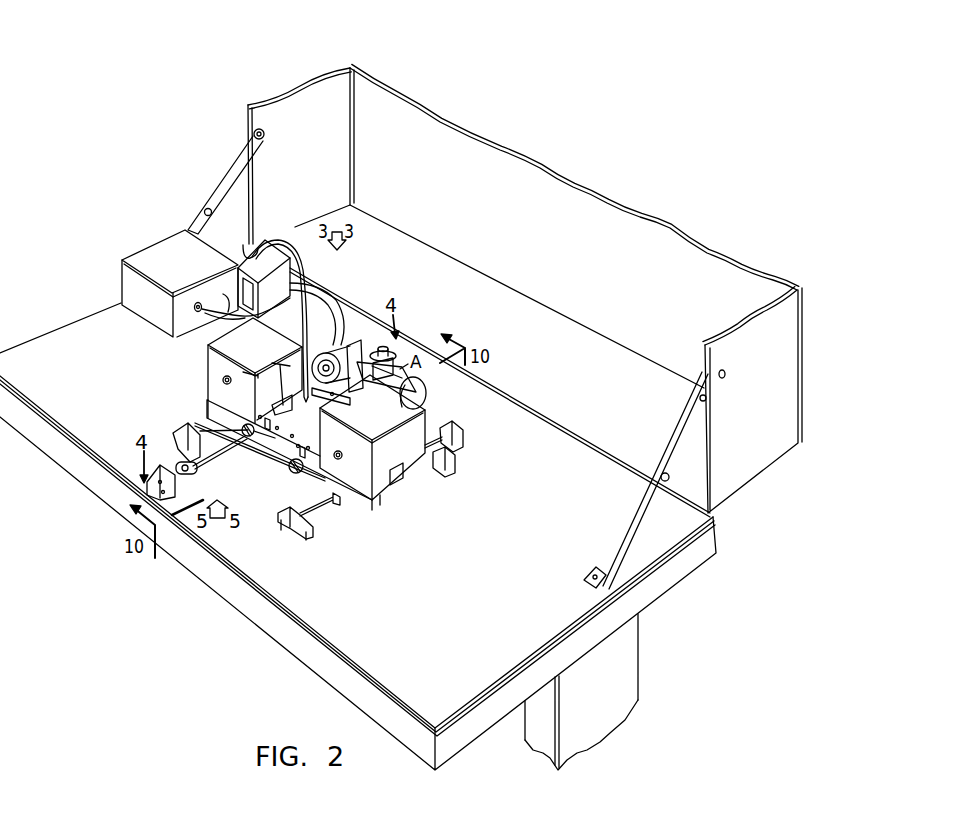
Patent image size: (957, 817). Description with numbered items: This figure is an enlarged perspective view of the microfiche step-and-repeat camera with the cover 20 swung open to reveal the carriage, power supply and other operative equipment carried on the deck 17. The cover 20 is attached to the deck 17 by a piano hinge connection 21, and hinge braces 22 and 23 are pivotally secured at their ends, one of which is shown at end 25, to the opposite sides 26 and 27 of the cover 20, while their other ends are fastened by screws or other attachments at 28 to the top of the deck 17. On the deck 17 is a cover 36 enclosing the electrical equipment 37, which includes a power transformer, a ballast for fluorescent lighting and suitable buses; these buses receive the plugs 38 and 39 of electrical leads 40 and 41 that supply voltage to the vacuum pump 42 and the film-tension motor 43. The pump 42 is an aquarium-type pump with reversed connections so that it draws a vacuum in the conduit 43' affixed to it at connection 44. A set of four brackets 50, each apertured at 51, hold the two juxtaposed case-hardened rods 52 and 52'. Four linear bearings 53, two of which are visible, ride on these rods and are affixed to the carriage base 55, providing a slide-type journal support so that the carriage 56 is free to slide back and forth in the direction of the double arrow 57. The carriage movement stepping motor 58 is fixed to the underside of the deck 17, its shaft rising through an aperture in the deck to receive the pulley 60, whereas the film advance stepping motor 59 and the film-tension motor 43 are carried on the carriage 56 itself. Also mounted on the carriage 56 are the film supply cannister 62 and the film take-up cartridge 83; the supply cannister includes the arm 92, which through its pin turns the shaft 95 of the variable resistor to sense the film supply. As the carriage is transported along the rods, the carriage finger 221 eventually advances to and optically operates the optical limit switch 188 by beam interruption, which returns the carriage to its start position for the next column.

The deck 17 is at (447, 690).
The cover 20 is at (772, 400).
The piano hinge connection 21 is at (560, 424).
The hinge brace 22 is at (680, 448).
The hinge brace 23 is at (230, 181).
The brace end 25 is at (254, 136).
The cover side 26 is at (768, 416).
The cover side 27 is at (298, 108).
The brace attachment 28 is at (583, 581).
The cover for electrical equipment 36 is at (144, 279).
The electrical equipment 37 is at (130, 282).
The plug 38 is at (196, 309).
The plug 39 is at (222, 292).
The electrical lead 40 is at (208, 314).
The electrical lead 41 is at (308, 295).
The vacuum pump 42 is at (262, 256).
The film-tension motor 43 is at (333, 304).
The vacuum conduit 43' is at (322, 297).
The connection 44 is at (247, 256).
The bracket 50 is at (277, 513).
The bracket aperture 51 is at (302, 513).
The case-hardened rod 52 is at (371, 437).
The case-hardened rod 52' is at (211, 462).
The linear bearing 53 is at (170, 437).
The carriage base 55 is at (285, 450).
The carriage 56 is at (251, 450).
The double arrow 57 is at (292, 415).
The carriage movement stepping motor 58 is at (390, 347).
The film advance stepping motor 59 is at (418, 387).
The pulley 60 is at (380, 352).
The film supply cannister 62 is at (212, 383).
The film take-up cartridge 83 is at (386, 465).
The arm 92 is at (263, 333).
The variable resistor shaft 95 is at (272, 378).
The optical limit switch 188 is at (463, 458).
The carriage finger 221 is at (417, 473).